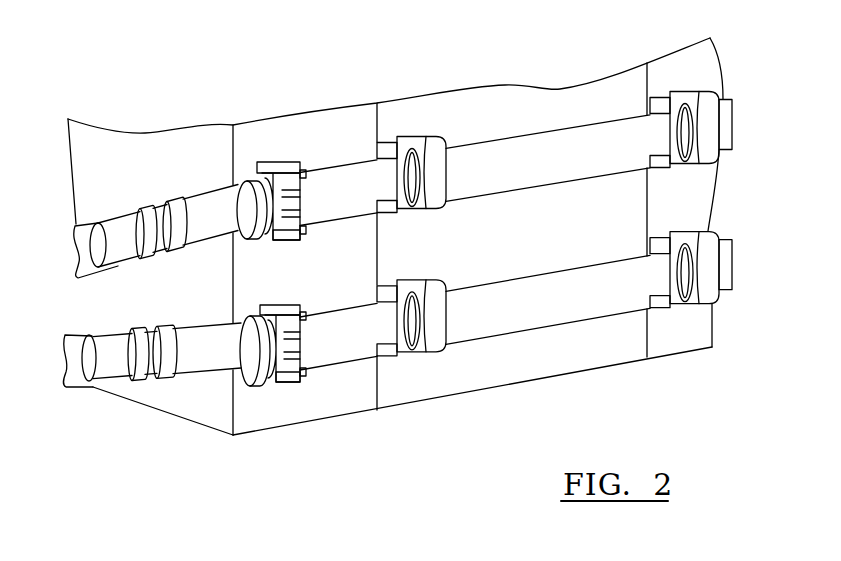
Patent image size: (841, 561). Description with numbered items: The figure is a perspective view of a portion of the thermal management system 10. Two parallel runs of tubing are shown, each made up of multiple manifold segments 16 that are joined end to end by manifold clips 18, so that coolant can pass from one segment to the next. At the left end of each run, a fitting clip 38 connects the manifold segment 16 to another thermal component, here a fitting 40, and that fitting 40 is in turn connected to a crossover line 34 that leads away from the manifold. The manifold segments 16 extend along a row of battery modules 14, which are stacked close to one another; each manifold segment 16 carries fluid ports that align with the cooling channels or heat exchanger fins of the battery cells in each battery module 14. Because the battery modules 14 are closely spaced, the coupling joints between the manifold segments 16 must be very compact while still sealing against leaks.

The thermal management system 10 is at (219, 486).
The battery module 14 is at (340, 395).
The manifold segment 16 is at (551, 131).
The manifold clip 18 is at (405, 135).
The crossover line 34 is at (85, 235).
The fitting clip 38 is at (274, 161).
The fitting 40 is at (208, 206).